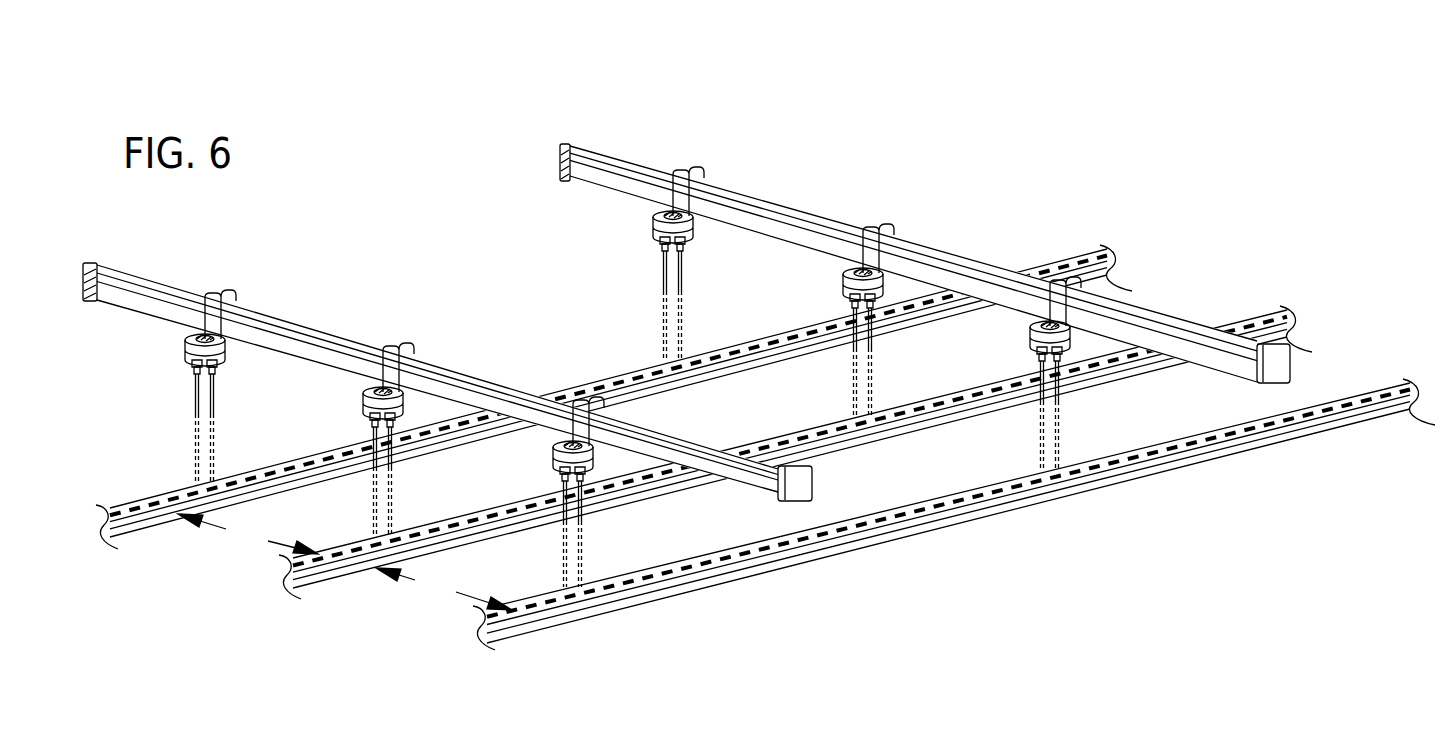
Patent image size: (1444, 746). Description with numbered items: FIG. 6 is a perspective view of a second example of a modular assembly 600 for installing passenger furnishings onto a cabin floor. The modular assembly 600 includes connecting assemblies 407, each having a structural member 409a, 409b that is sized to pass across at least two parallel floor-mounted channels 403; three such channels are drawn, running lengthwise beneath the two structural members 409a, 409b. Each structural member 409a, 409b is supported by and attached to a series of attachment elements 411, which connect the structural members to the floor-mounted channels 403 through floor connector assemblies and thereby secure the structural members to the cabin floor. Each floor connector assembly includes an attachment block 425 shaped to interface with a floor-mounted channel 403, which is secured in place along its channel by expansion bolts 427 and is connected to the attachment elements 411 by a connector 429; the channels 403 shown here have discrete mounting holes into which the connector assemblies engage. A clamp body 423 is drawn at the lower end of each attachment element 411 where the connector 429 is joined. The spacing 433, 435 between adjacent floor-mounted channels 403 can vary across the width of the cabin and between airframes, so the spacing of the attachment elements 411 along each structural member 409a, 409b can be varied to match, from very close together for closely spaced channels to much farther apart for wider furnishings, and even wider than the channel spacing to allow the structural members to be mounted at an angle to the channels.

The modular assembly 600 is at (970, 80).
The floor-mounted channel 403 is at (278, 496).
The connecting assembly 407 is at (796, 157).
The structural member 409a is at (488, 378).
The structural member 409b is at (962, 260).
The attachment element 411 is at (402, 348).
The clamp body 423 is at (556, 452).
The attachment block 425 is at (550, 470).
The expansion bolt 427 is at (583, 484).
The connector 429 is at (180, 494).
The spacing 433 is at (248, 534).
The spacing 435 is at (444, 589).